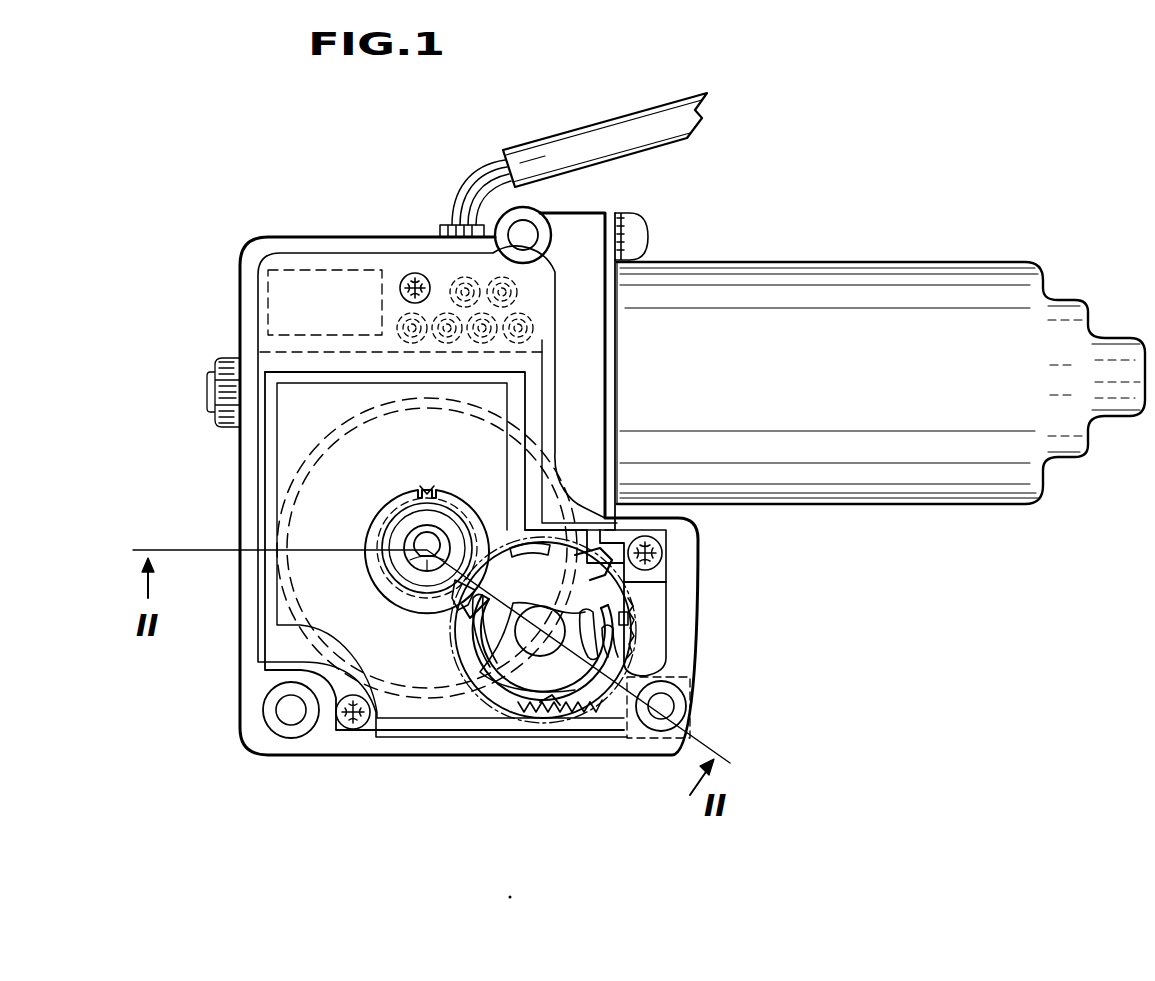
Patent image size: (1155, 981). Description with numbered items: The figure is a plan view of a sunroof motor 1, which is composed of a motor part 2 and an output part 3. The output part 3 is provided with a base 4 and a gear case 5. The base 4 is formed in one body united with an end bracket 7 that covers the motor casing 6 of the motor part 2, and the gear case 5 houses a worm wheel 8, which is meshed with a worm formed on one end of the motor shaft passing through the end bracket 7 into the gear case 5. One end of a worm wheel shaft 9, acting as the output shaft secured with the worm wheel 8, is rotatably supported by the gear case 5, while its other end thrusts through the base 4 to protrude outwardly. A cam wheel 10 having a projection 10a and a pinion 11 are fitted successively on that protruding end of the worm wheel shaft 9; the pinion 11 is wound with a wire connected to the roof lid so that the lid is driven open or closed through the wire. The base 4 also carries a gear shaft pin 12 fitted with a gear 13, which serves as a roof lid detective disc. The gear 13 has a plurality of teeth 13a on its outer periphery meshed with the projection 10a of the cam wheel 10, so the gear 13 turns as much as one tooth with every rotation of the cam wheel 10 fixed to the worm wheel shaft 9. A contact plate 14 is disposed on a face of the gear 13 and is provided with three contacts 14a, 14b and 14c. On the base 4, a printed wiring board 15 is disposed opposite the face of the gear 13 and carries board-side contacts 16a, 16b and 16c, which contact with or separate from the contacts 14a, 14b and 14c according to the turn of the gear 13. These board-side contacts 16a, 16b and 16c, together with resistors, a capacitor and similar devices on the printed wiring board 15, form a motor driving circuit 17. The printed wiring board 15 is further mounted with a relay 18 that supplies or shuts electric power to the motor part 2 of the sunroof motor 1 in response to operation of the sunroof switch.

The sunroof motor 1 is at (877, 198).
The motor part 2 is at (967, 262).
The output part 3 is at (262, 752).
The base 4 is at (398, 270).
The gear case 5 is at (240, 654).
The motor casing 6 is at (893, 485).
The end bracket 7 is at (577, 253).
The worm wheel 8 is at (296, 468).
The worm wheel shaft 9 is at (430, 553).
The cam wheel 10 is at (377, 503).
The projection 10a is at (427, 490).
The pinion 11 is at (362, 545).
The gear shaft pin 12 is at (627, 623).
The gear 13 is at (540, 720).
The teeth 13a is at (597, 700).
The contact plate 14 is at (637, 647).
The contact 14a is at (622, 537).
The contact 14b is at (560, 690).
The contact 14c is at (440, 622).
The printed wiring board 15 is at (328, 372).
The board-side contact 16a is at (627, 567).
The board-side contact 16b is at (465, 685).
The board-side contact 16c is at (630, 587).
The motor driving circuit 17 is at (458, 388).
The relay 18 is at (692, 683).